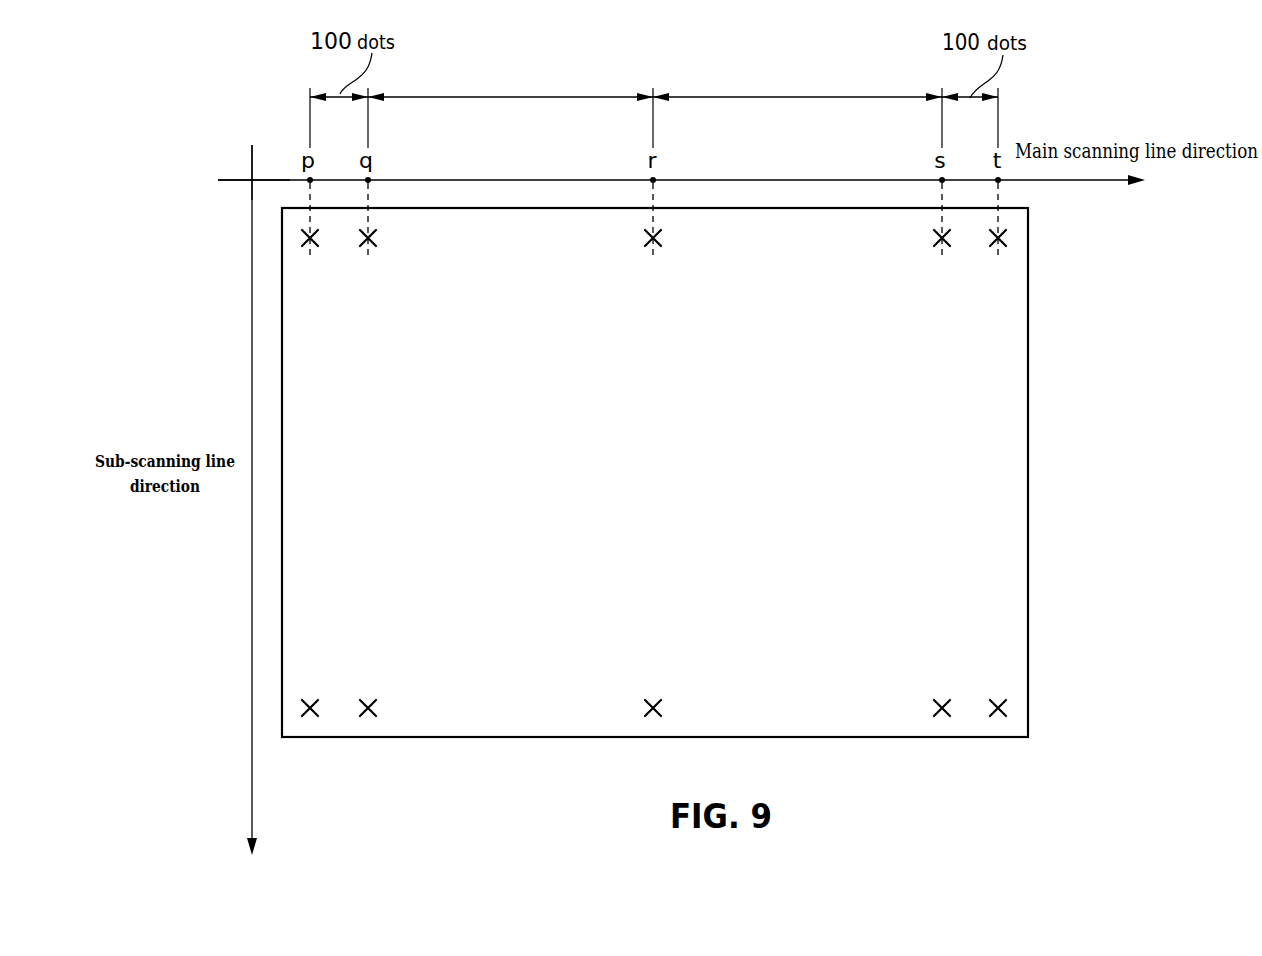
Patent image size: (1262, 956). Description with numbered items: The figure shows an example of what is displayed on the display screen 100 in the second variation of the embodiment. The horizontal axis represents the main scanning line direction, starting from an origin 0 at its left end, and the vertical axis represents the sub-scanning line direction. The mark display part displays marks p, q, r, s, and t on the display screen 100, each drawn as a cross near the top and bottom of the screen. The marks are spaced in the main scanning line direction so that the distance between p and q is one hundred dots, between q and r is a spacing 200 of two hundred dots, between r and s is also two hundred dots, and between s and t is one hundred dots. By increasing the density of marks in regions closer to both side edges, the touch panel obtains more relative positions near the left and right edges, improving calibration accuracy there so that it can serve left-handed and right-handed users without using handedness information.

The display screen 100 is at (1028, 562).
The 200-dot spacing between registration marks 200 is at (655, 84).
The origin of main scanning axis 0 is at (254, 172).